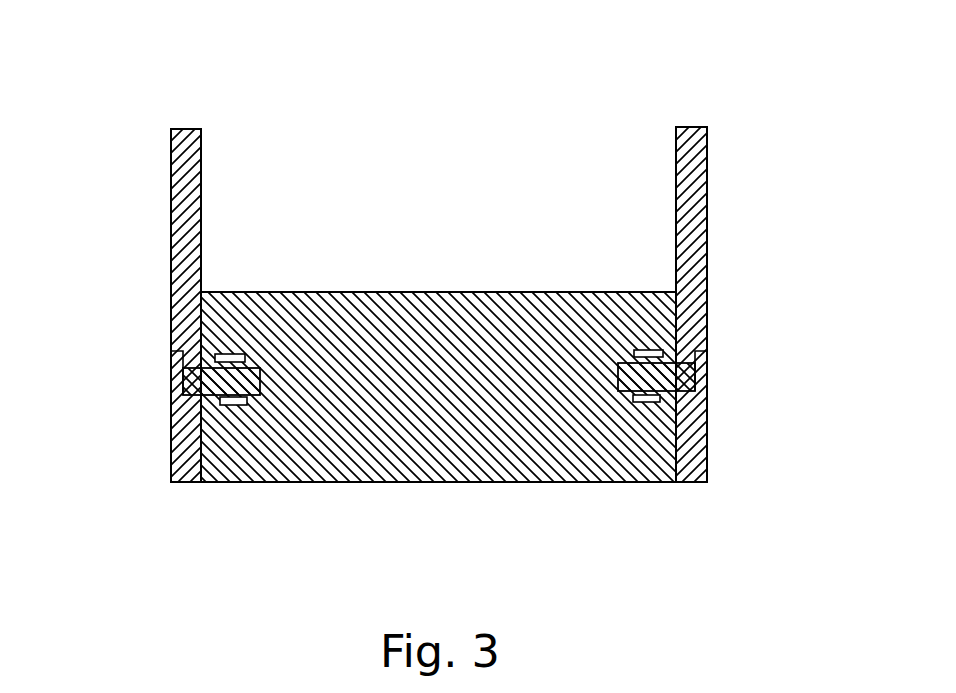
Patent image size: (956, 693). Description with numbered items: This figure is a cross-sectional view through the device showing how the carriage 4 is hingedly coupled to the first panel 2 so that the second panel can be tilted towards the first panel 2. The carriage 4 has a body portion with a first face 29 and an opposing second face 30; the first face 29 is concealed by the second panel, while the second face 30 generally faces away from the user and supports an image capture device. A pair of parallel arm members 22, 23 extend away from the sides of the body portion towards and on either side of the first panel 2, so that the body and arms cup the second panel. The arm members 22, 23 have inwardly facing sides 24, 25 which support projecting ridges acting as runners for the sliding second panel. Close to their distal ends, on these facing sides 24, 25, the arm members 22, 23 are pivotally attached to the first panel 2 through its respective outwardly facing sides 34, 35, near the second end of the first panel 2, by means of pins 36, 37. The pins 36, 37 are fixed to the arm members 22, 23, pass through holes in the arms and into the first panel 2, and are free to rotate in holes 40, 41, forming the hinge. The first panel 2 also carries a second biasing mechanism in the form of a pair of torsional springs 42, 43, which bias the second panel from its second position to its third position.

The first housing portion 2 is at (432, 452).
The carriage 4 is at (707, 481).
The arm member 22 is at (185, 160).
The arm member 23 is at (695, 150).
The facing side 24 is at (212, 160).
The facing side 25 is at (664, 156).
The first face 29 is at (502, 497).
The second face 30 is at (502, 278).
The outwardly facing side 34 is at (188, 458).
The outwardly facing side 35 is at (697, 441).
The pin 36 is at (175, 393).
The pin 37 is at (707, 398).
The hole 40 is at (247, 363).
The hole 41 is at (640, 360).
The torsional spring 42 is at (228, 404).
The torsional spring 43 is at (646, 403).